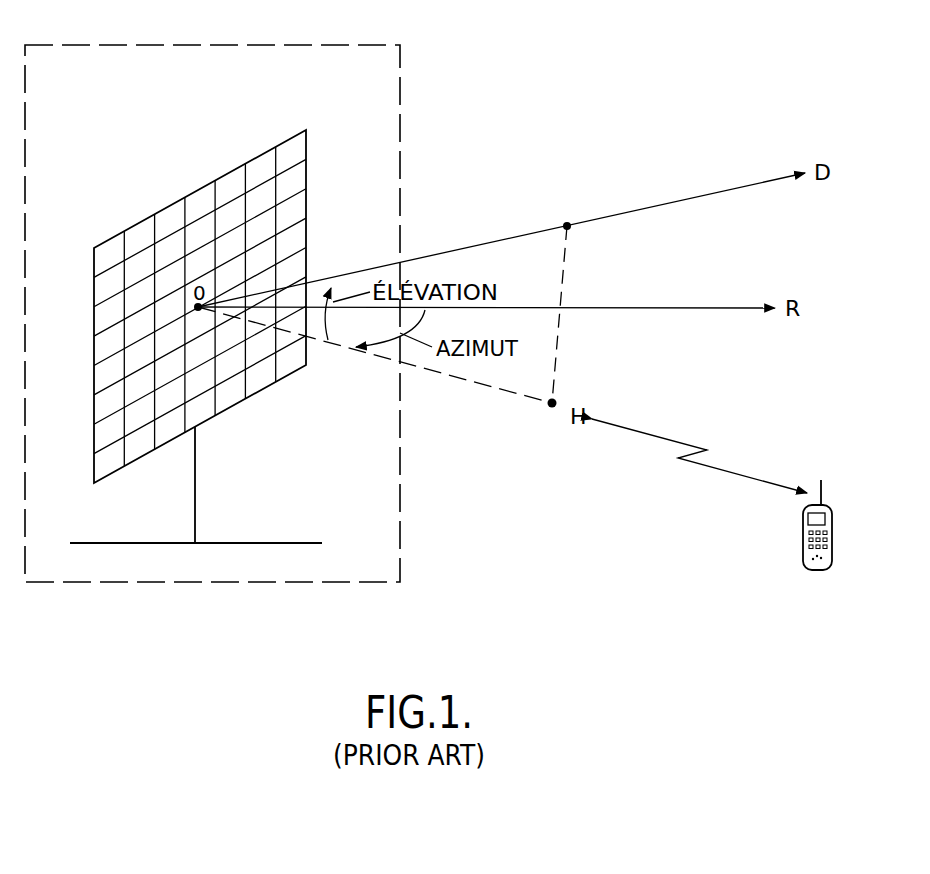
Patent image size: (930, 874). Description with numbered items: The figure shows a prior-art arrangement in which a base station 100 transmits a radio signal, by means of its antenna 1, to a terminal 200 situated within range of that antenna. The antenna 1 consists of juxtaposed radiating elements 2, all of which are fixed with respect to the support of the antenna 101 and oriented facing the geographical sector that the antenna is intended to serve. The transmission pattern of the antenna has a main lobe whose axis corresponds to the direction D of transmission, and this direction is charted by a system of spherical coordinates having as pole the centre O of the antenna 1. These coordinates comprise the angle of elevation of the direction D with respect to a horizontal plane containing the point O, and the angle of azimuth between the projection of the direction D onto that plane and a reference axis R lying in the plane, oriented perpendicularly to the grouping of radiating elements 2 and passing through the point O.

The base station 100 is at (400, 88).
The antenna 1 is at (306, 176).
The radiating elements 2 is at (260, 170).
The support of the antenna 101 is at (195, 491).
The terminal 200 is at (807, 567).